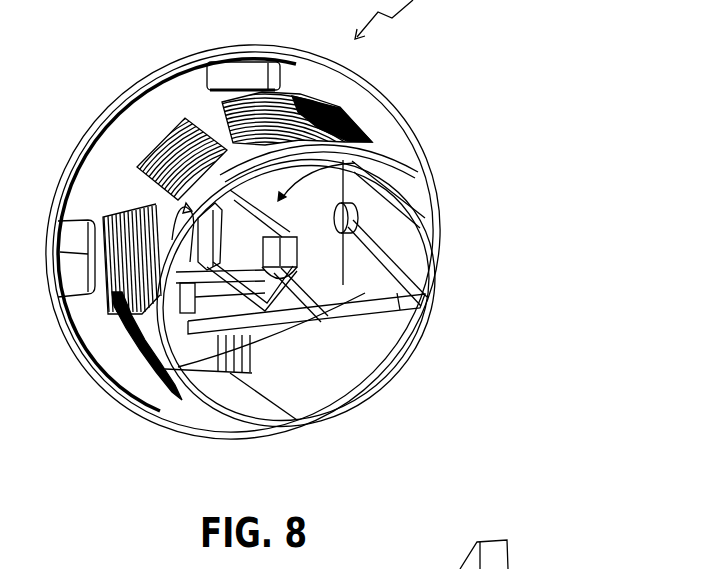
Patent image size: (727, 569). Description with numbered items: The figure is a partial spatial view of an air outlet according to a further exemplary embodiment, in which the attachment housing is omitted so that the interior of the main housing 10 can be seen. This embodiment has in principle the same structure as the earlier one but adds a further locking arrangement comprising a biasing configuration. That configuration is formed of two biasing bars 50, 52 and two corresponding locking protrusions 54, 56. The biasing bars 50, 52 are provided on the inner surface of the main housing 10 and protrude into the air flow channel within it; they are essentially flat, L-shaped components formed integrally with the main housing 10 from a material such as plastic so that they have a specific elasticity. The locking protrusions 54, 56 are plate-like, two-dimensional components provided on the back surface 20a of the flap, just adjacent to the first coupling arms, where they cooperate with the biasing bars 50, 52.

The main housing 10 is at (377, 128).
The back surface of the flap 20a is at (409, 213).
The biasing bar 50 is at (203, 327).
The biasing bar 52 is at (357, 310).
The locking protrusion 54 is at (205, 240).
The locking protrusion 56 is at (355, 163).